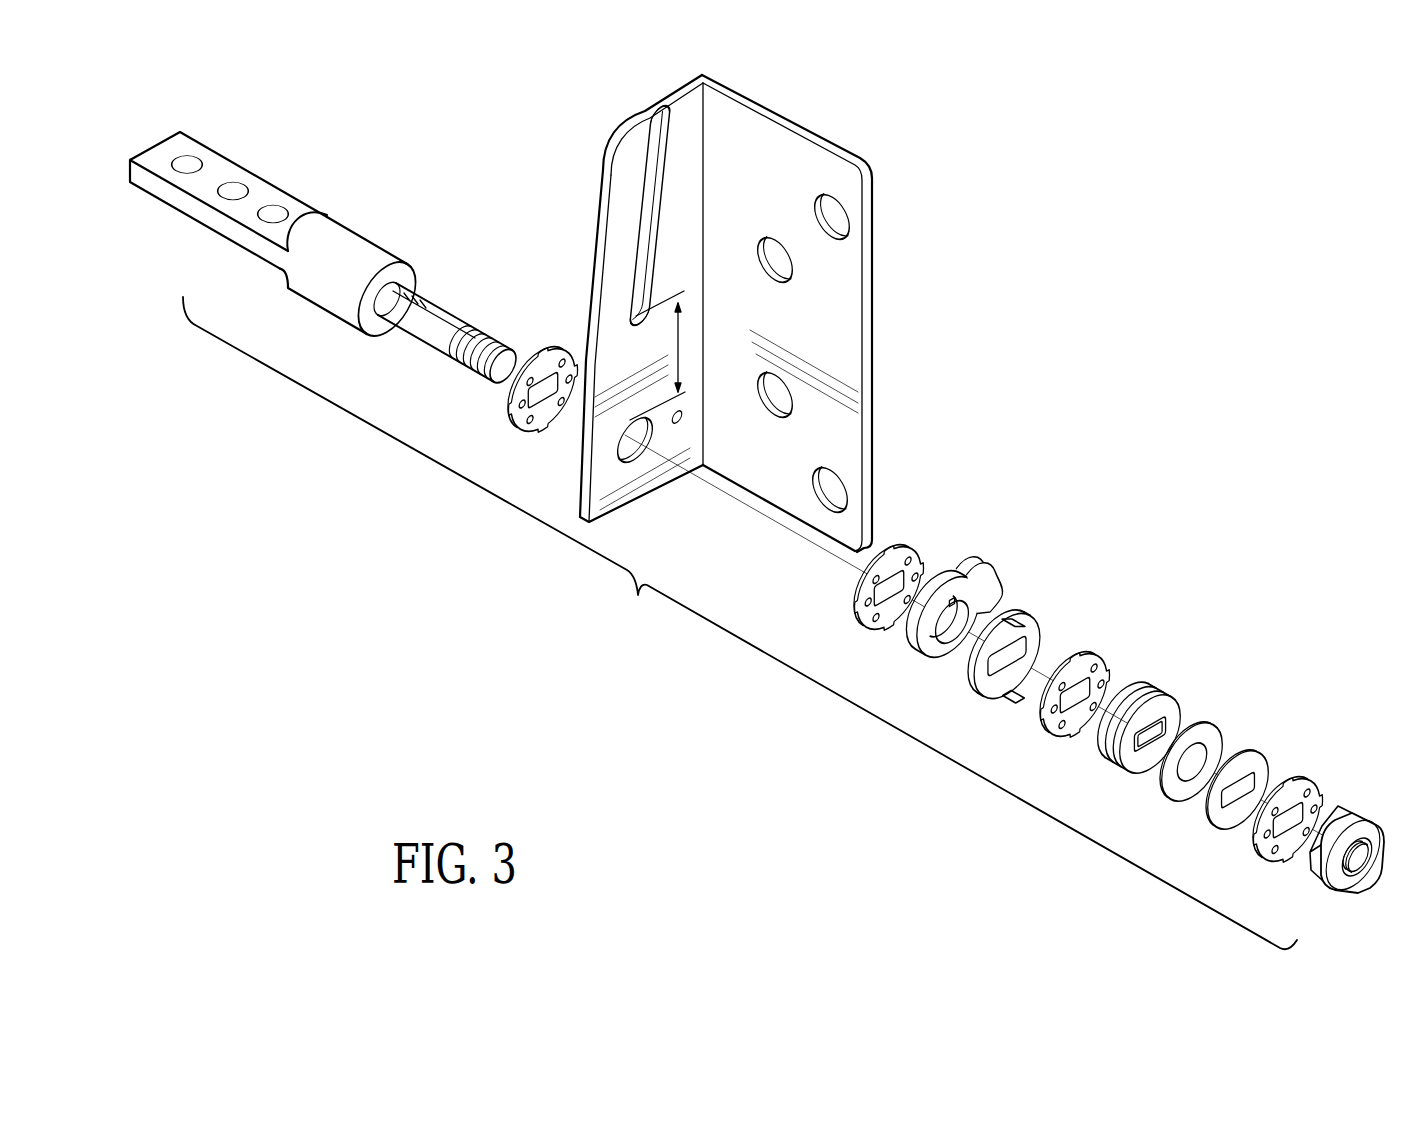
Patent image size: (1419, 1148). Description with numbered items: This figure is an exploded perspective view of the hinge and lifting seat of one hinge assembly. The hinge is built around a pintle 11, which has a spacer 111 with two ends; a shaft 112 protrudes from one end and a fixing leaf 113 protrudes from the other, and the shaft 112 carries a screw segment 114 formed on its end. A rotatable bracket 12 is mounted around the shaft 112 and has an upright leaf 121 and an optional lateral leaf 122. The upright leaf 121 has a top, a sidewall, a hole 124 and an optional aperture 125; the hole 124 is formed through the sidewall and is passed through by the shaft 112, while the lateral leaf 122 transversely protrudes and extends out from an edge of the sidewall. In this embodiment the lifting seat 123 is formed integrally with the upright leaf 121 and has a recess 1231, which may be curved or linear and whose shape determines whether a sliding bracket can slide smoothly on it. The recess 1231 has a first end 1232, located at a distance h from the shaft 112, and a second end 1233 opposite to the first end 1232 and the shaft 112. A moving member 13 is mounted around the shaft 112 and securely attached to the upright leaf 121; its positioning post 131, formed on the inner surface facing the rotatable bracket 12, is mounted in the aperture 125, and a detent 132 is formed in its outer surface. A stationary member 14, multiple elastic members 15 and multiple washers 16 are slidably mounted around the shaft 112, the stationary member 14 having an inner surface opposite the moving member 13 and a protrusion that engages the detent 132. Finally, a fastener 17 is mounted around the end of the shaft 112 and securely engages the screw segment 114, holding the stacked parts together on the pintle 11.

The pintle 11 is at (378, 195).
The spacer 111 is at (370, 244).
The shaft 112 is at (457, 318).
The fixing leaf 113 is at (226, 172).
The screw segment 114 is at (473, 368).
The rotatable bracket 12 is at (807, 172).
The upright leaf 121 is at (580, 438).
The lateral leaf 122 is at (843, 278).
The lifting seat 123 is at (623, 130).
The recess 1231 is at (648, 222).
The first end 1232 is at (645, 295).
The second end 1233 is at (658, 122).
The hole 124 is at (637, 458).
The aperture 125 is at (685, 413).
The moving member 13 is at (943, 585).
The positioning post 131 is at (973, 580).
The detent 132 is at (945, 657).
The stationary member 14 is at (1017, 622).
The elastic members 15 is at (1278, 746).
The washers 16 is at (1093, 658).
The fastener 17 is at (1342, 815).